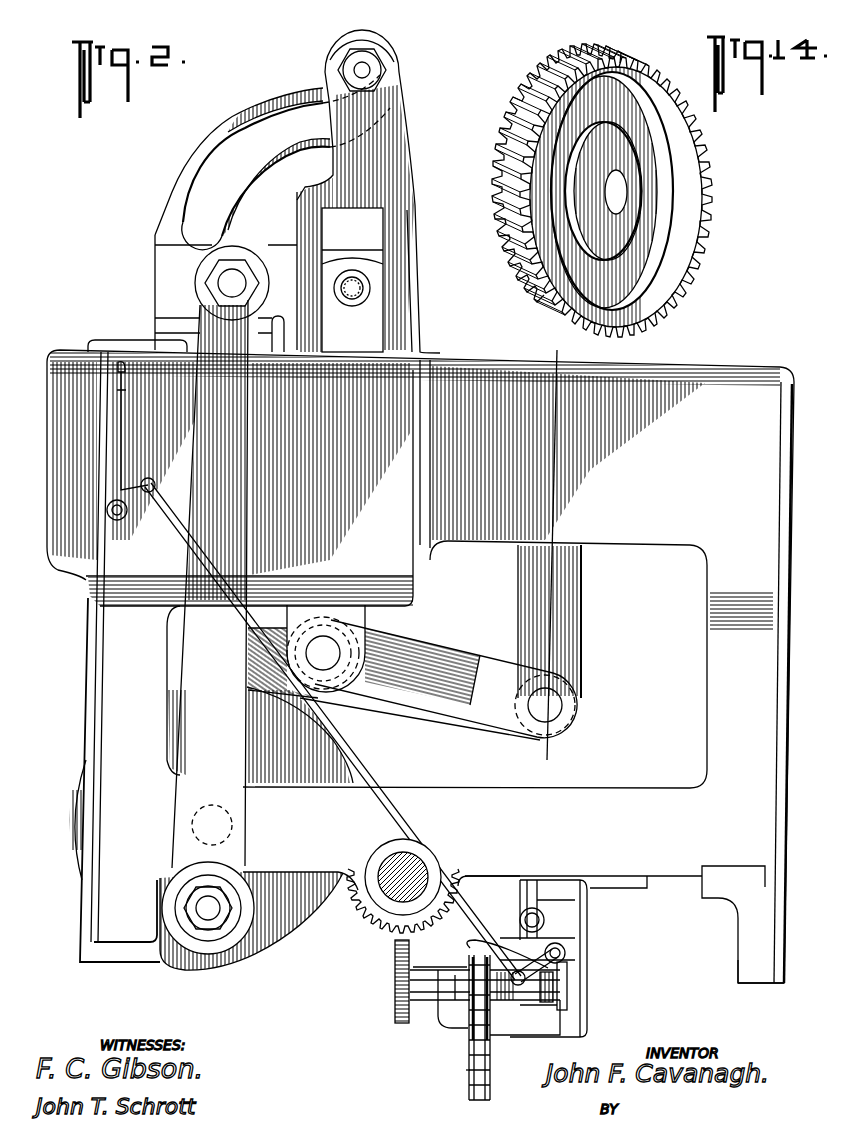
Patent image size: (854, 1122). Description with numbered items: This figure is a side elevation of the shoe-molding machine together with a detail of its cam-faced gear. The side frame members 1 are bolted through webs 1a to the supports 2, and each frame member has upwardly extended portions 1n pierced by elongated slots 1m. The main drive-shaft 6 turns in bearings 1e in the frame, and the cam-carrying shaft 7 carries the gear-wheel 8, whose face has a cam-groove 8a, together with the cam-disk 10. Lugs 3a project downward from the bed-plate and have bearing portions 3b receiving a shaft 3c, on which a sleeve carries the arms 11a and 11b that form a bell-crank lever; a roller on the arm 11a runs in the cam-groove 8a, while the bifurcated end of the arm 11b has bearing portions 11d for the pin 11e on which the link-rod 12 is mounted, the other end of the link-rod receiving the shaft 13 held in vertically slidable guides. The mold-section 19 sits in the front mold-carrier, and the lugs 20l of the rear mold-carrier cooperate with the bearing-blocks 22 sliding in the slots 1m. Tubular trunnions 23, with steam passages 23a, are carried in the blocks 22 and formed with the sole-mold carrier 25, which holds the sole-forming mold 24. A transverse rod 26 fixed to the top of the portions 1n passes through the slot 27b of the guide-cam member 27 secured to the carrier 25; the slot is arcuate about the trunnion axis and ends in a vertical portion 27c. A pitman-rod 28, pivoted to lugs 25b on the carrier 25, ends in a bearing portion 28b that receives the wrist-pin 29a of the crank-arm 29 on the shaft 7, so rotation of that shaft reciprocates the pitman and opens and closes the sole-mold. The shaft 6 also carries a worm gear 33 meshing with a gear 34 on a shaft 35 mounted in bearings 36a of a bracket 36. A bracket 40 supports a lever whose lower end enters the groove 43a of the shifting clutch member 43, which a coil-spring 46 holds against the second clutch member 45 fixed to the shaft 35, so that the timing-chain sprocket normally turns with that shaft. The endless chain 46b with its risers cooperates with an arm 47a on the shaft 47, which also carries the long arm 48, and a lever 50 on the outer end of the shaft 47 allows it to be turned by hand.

In FIG. 2, the side frame members 1 is at (100, 664).
In FIG. 2, the webs 1a is at (713, 876).
In FIG. 2, the bearings 1e is at (462, 880).
In FIG. 2, the elongated slots 1m is at (352, 232).
In FIG. 2, the vertically-extended portions 1n is at (386, 146).
In FIG. 2, the supports 2 is at (752, 938).
In FIG. 2, the lugs 3a is at (362, 616).
In FIG. 2, the bearing portions 3b is at (362, 690).
In FIG. 2, the shaft 3c is at (330, 662).
In FIG. 2, the main drive-shaft 6 is at (402, 864).
In FIG. 2, the cam-carrying shaft 7 is at (210, 805).
In FIG. 14, the gear-wheel 8 is at (550, 60).
In FIG. 14, the cam-groove 8a is at (630, 272).
In FIG. 2, the cam-disk 10 is at (296, 950).
In FIG. 2, the arm 11a is at (268, 663).
In FIG. 2, the arm 11b is at (448, 660).
In FIG. 2, the bearing portions 11d is at (568, 712).
In FIG. 2, the pin 11e is at (548, 706).
In FIG. 2, the link-rod 12 is at (582, 603).
In FIG. 2, the shaft 13 is at (548, 556).
In FIG. 2, the mold-section 19 is at (107, 340).
In FIG. 2, the lugs 20l is at (277, 332).
In FIG. 2, the bearing-blocks 22 is at (352, 280).
In FIG. 2, the trunnions 23 is at (364, 258).
In FIG. 2, the passages 23a is at (366, 288).
In FIG. 2, the sole-forming mold 24 is at (170, 328).
In FIG. 2, the sole-mold carrier 25 is at (165, 262).
In FIG. 2, the lugs 25b is at (234, 280).
In FIG. 2, the transverse rod 26 is at (370, 68).
In FIG. 2, the guide-cam member 27 is at (240, 128).
In FIG. 2, the slot 27b is at (286, 162).
In FIG. 2, the vertical portion 27c is at (360, 46).
In FIG. 2, the pitman-rod 28 is at (232, 544).
In FIG. 2, the bearing portion 28b is at (205, 890).
In FIG. 2, the crank-arm 29 is at (249, 860).
In FIG. 2, the wrist-pin 29a is at (200, 908).
In FIG. 2, the worm gear 33 is at (382, 930).
In FIG. 2, the gear 34 is at (395, 990).
In FIG. 2, the shaft 35 is at (485, 995).
In FIG. 2, the bracket 36 is at (500, 1040).
In FIG. 2, the bearings 36a is at (438, 1010).
In FIG. 2, the bracket 40 is at (582, 988).
In FIG. 2, the shifting clutch member 43 is at (569, 1022).
In FIG. 2, the groove 43a is at (533, 1002).
In FIG. 2, the second clutch member 45 is at (555, 1000).
In FIG. 2, the coil-spring 46 is at (500, 1020).
In FIG. 2, the endless chain 46b is at (470, 1076).
In FIG. 2, the shaft 47 is at (566, 954).
In FIG. 2, the arm 47a is at (510, 942).
In FIG. 2, the long arm 48 is at (538, 898).
In FIG. 2, the lever 50 is at (548, 968).